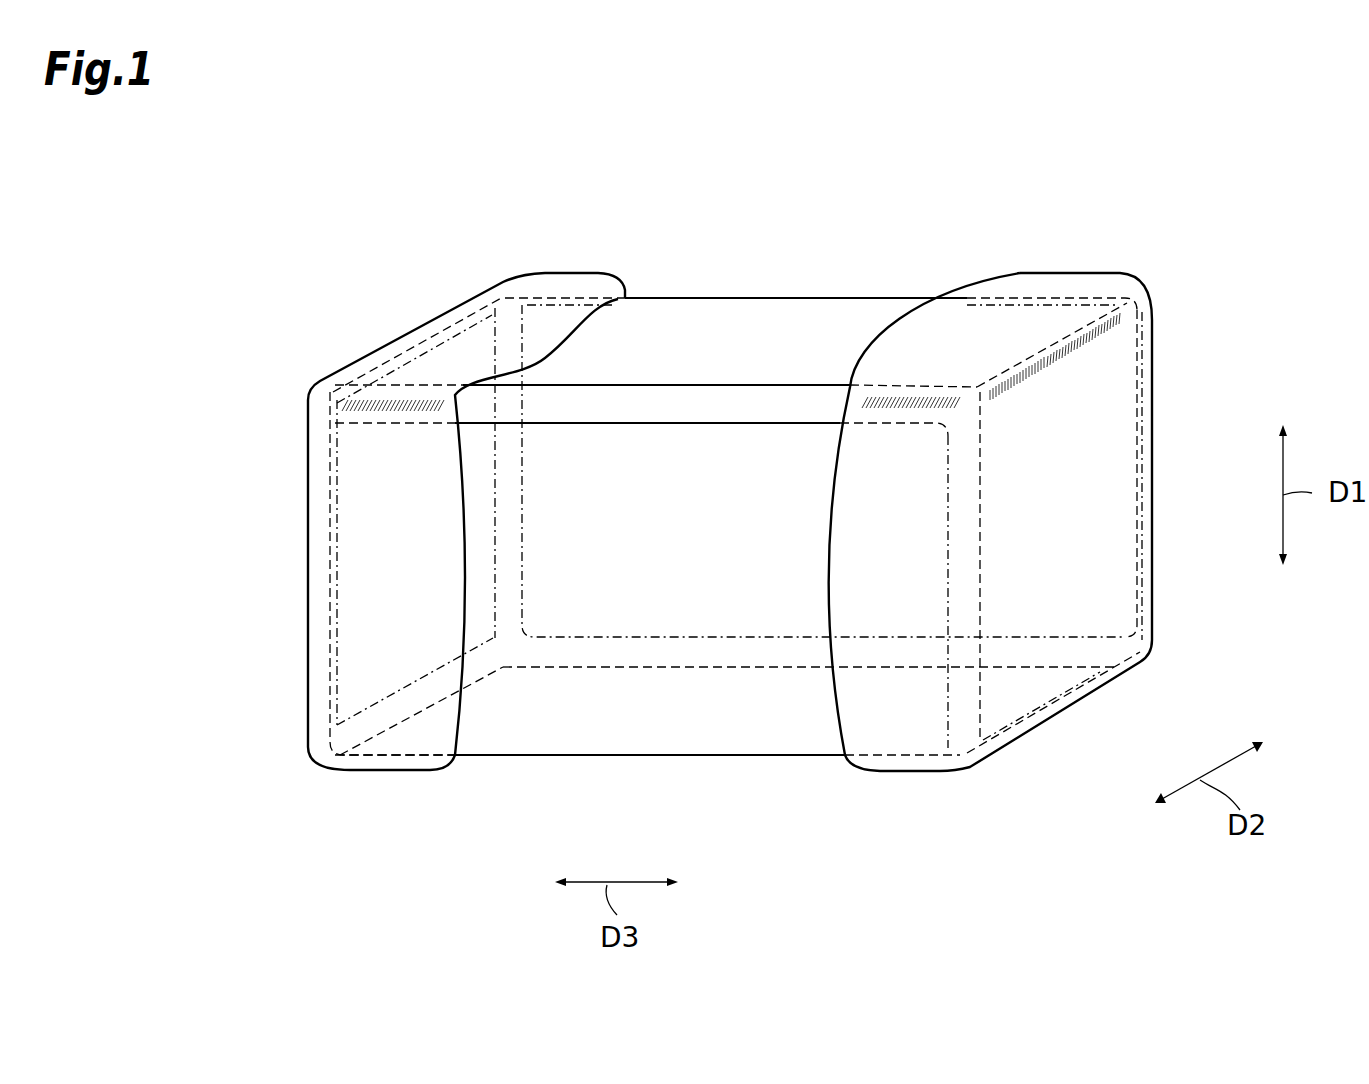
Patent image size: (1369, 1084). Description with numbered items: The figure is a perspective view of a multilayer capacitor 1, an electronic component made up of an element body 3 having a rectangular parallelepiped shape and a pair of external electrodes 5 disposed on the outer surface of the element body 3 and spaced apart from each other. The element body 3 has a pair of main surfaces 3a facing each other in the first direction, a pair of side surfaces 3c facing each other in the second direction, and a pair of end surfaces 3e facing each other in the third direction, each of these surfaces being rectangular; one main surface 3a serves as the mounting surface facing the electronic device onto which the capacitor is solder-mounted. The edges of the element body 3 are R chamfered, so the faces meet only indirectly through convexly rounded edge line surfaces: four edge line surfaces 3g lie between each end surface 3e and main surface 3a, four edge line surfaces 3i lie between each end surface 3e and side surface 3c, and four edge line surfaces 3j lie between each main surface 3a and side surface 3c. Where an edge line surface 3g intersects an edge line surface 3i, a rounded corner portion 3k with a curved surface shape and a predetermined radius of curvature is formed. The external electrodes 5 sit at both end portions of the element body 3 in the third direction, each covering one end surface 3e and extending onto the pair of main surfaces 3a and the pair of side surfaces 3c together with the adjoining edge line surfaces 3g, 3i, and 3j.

The multilayer capacitor 1 is at (1182, 188).
The element body 3 is at (905, 300).
The main surface 3a is at (740, 315).
The side surface 3c is at (815, 340).
The end surface 3e is at (368, 497).
The edge line surface 3g is at (420, 343).
The edge line surface 3i is at (507, 300).
The edge line surface 3j is at (790, 303).
The corner portion 3k is at (500, 283).
The external electrode 5 is at (530, 272).